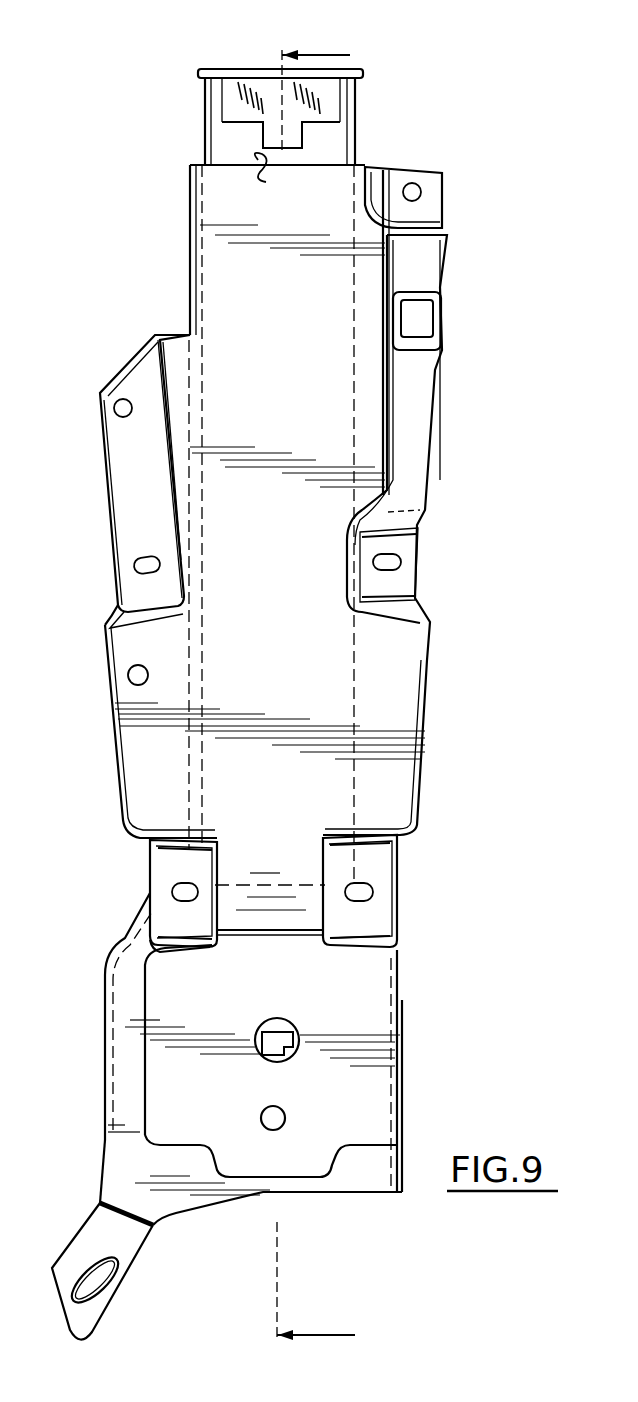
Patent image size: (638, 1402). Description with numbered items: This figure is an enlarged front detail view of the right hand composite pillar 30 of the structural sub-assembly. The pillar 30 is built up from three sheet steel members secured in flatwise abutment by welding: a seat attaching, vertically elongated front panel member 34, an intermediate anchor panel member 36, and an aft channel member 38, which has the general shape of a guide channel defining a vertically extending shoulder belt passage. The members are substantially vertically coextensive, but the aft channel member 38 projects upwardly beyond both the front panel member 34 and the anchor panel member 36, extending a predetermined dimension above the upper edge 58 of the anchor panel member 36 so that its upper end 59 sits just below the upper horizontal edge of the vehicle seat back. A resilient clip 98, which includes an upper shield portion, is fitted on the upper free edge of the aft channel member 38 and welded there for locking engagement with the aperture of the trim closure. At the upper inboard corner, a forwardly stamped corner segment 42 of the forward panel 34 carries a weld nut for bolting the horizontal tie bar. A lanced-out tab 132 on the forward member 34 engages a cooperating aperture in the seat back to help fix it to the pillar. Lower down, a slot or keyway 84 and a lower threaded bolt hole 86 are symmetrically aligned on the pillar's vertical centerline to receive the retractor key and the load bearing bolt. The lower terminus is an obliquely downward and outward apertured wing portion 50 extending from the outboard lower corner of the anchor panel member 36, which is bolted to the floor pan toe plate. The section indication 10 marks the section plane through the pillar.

The section line 10- 10 is at (334, 700).
The composite pillar 30 is at (143, 286).
The front panel member 34 is at (110, 821).
The intermediate anchor panel member 36 is at (222, 1059).
The aft channel member 38 is at (272, 99).
The corner segment 42 is at (433, 398).
The apertured wing portion 50 is at (125, 1256).
The upper edge 58 is at (280, 179).
The upper end 59 is at (235, 70).
The keyway 84 is at (295, 1030).
The lower threaded bolt hole 86 is at (286, 1116).
The resilient clip 98 is at (293, 140).
The lanced-out tab 132 is at (418, 320).